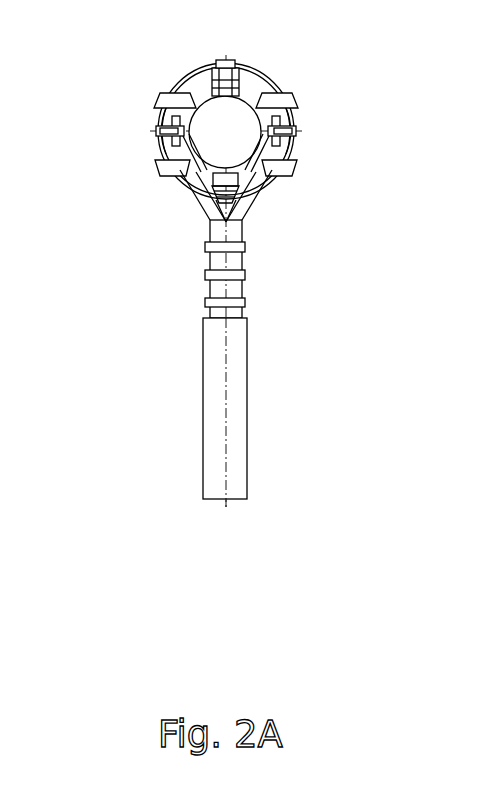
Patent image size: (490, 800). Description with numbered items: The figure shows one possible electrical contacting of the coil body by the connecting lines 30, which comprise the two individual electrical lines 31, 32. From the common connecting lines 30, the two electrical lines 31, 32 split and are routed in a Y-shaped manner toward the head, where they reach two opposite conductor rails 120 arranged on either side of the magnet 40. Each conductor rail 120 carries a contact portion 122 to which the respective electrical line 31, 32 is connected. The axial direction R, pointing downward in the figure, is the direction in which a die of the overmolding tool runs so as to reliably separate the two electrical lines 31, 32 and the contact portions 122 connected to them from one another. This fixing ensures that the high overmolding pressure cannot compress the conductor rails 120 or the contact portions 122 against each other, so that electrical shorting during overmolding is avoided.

The axial direction R is at (222, 128).
The magnet 40 is at (238, 113).
The conductor rail 120 is at (158, 132).
The contact portion 122 is at (297, 128).
The electrical line 31 is at (178, 168).
The electrical line 32 is at (275, 167).
The connecting lines 30 is at (233, 357).